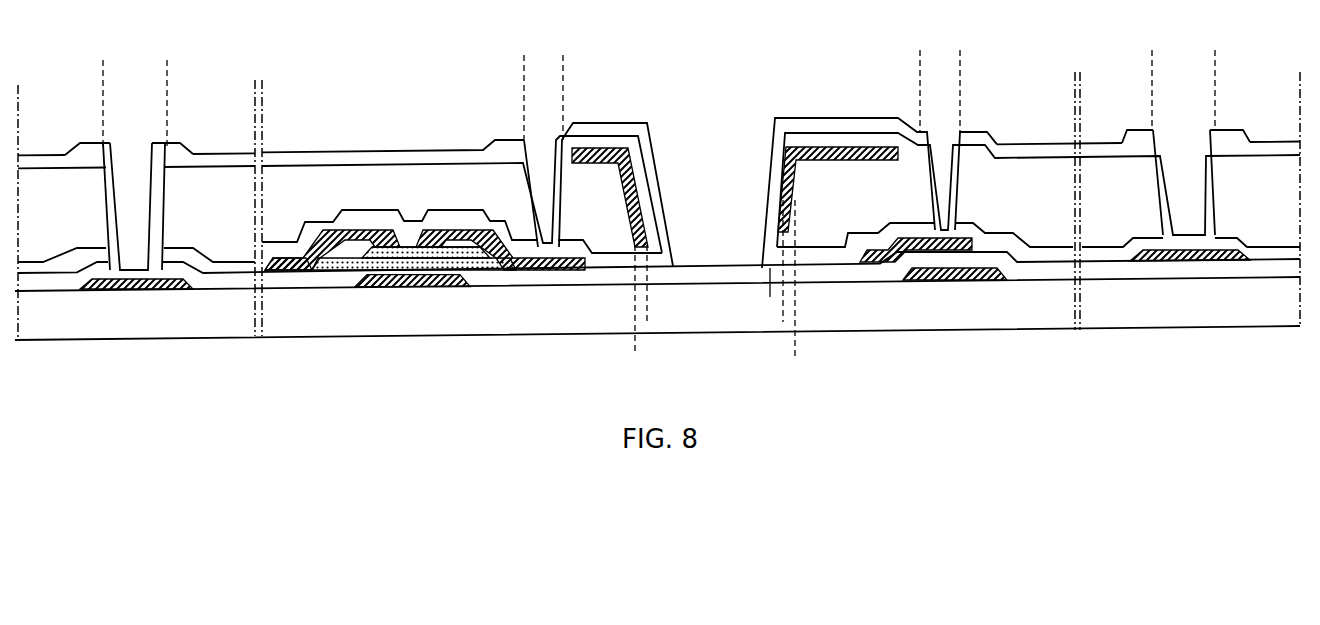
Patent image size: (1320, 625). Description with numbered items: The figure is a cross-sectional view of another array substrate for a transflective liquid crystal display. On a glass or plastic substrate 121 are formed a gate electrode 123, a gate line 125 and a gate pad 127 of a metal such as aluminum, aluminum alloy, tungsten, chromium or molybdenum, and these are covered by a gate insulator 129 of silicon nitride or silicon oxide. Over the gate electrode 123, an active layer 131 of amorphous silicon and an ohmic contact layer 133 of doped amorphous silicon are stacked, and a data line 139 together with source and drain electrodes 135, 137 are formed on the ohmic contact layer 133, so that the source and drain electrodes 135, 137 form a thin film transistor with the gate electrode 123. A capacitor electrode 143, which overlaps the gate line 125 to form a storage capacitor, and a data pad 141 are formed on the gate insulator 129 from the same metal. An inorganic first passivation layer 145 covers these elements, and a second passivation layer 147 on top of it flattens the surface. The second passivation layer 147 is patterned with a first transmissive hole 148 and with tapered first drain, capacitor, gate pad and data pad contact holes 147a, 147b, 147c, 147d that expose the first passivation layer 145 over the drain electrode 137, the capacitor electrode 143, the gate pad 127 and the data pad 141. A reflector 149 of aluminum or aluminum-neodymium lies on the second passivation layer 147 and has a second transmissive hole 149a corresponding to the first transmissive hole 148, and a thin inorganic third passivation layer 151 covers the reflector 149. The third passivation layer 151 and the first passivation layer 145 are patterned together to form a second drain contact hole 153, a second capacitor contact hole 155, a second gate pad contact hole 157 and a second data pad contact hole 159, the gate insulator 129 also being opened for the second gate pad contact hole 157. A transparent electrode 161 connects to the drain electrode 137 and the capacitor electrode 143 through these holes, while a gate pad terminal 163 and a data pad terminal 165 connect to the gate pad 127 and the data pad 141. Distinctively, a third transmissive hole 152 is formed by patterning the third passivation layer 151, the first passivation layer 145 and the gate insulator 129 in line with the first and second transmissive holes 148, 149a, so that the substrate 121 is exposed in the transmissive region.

The substrate 121 is at (490, 318).
The gate electrode 123 is at (388, 287).
The gate line 125 is at (967, 280).
The gate pad 127 is at (150, 289).
The gate insulator 129 is at (237, 272).
The active layer 131 is at (403, 243).
The ohmic contact layer 133 is at (462, 230).
The source electrode 135 is at (357, 228).
The drain electrode 137 is at (485, 238).
The data line 139 is at (304, 256).
The data pad 141 is at (1177, 261).
The capacitor electrode 143 is at (880, 262).
The first passivation layer 145 is at (50, 262).
The second passivation layer 147 is at (80, 190).
The first drain contact hole 147a is at (545, 203).
The first capacitor contact hole 147b is at (942, 177).
The first gate pad contact hole 147c is at (135, 192).
The first data pad contact hole 147d is at (1190, 188).
The first transmissive hole 148 is at (635, 346).
The reflector 149 is at (853, 158).
The second transmissive hole 149a is at (648, 316).
The third passivation layer 151 is at (183, 160).
The third transmissive hole 152 is at (665, 290).
The second drain contact hole 153 is at (563, 75).
The second capacitor contact hole 155 is at (920, 63).
The second gate pad contact hole 157 is at (103, 88).
The second data pad contact hole 159 is at (1152, 75).
The transparent electrode 161 is at (637, 135).
The gate pad terminal 163 is at (180, 143).
The data pad terminal 165 is at (1230, 133).